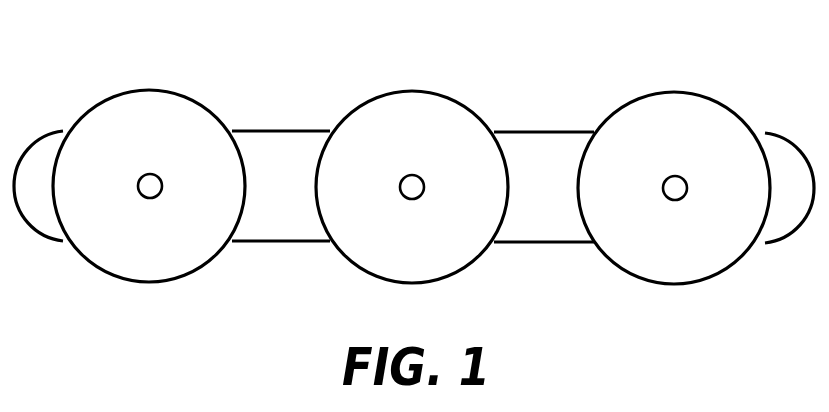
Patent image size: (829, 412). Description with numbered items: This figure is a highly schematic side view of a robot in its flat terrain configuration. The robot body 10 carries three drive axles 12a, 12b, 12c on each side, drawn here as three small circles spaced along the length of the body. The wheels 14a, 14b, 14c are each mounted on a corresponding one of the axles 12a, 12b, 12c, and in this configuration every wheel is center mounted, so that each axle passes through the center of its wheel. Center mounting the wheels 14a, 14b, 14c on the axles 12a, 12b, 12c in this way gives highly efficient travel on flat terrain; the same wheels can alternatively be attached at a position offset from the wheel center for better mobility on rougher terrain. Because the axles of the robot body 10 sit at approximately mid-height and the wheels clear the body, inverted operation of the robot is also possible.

The robot body 10 is at (555, 222).
The drive axle 12a is at (157, 174).
The drive axle 12b is at (418, 175).
The drive axle 12c is at (684, 176).
The wheel 14a is at (129, 264).
The wheel 14b is at (391, 264).
The wheel 14c is at (653, 265).